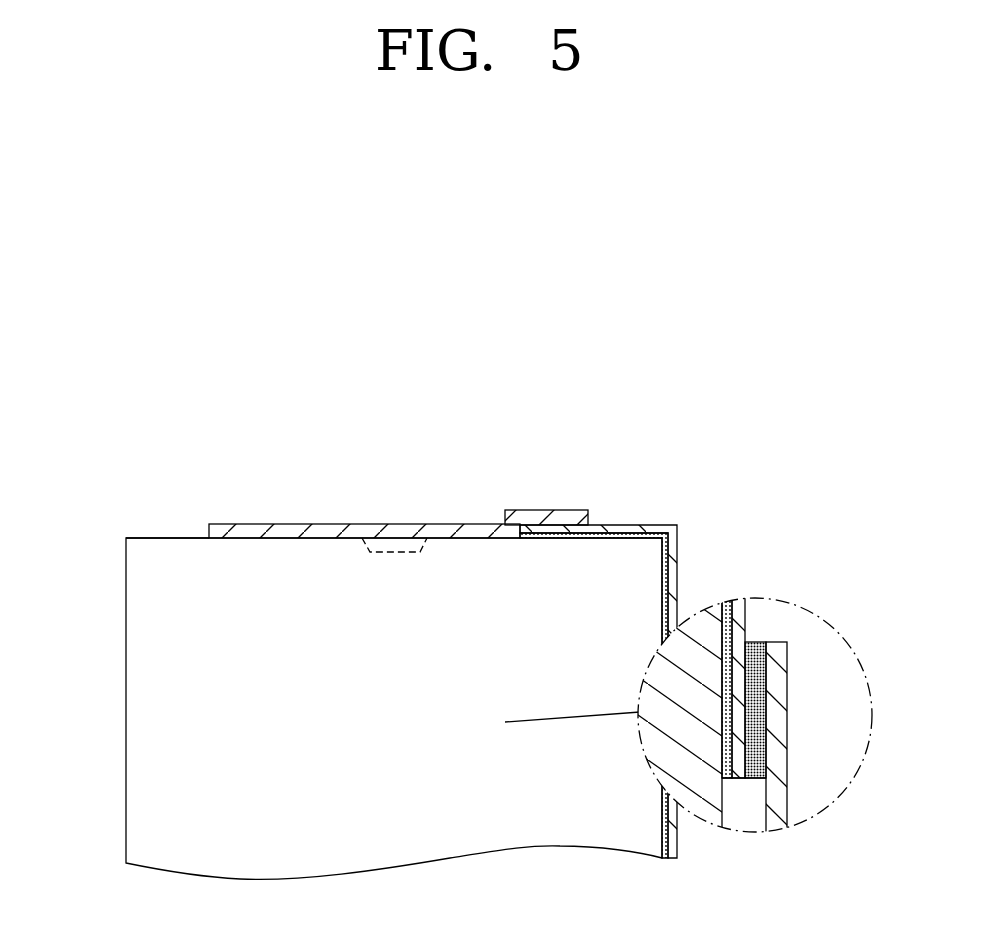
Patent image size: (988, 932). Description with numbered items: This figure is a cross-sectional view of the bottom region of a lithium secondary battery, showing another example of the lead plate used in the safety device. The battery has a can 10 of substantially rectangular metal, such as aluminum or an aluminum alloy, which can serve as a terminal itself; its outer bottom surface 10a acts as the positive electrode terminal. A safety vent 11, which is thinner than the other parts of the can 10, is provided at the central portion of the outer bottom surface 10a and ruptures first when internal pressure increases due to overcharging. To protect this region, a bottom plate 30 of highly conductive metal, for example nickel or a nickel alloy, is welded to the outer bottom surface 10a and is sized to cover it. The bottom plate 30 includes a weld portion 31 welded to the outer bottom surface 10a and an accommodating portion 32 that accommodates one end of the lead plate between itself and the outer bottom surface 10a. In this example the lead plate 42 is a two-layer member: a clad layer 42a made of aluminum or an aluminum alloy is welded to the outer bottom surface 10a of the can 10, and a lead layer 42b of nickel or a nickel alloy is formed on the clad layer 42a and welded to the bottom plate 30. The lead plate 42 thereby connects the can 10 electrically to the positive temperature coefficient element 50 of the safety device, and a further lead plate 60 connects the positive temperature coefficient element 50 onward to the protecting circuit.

The can 10 is at (138, 745).
The outer bottom surface 10a is at (182, 538).
The safety vent 11 is at (388, 548).
The bottom plate 30 is at (398, 480).
The weld portion 31 is at (290, 530).
The accommodating portion 32 is at (546, 515).
The lead plate 42 is at (691, 628).
The clad layer 42a is at (715, 455).
The lead layer 42b is at (663, 527).
The positive temperature coefficient element 50 is at (752, 781).
The lead plate 60 is at (778, 805).